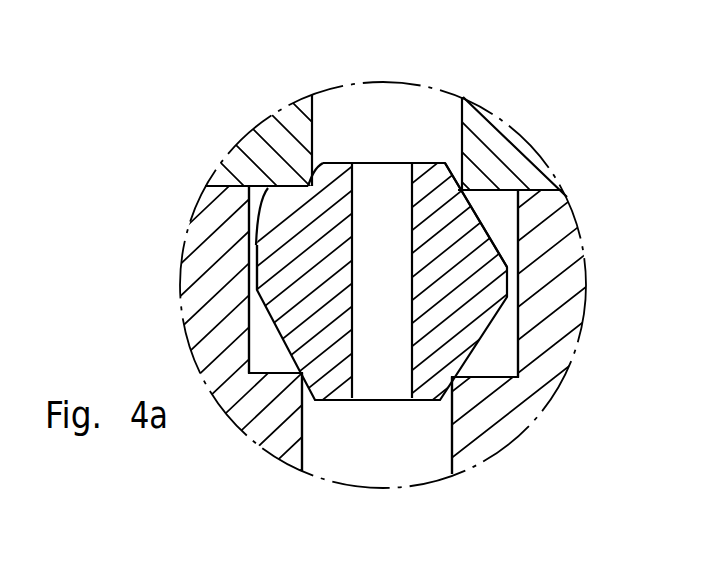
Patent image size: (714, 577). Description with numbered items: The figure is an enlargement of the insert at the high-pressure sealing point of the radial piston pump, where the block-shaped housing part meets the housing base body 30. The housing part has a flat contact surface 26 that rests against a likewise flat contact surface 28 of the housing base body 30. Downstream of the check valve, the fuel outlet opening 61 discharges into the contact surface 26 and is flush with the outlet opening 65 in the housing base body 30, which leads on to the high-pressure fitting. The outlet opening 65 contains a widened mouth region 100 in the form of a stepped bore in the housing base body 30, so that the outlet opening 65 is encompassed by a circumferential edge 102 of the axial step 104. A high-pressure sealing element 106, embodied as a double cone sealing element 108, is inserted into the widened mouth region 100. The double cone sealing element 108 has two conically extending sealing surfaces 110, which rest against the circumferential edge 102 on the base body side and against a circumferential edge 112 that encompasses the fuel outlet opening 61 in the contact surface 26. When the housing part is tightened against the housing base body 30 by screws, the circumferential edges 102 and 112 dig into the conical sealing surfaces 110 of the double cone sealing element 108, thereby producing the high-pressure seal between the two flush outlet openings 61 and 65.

The contact surface 26 is at (268, 189).
The contact surface 28 is at (224, 182).
The housing base body 30 is at (553, 225).
The fuel outlet opening 61 is at (312, 125).
The outlet opening 65 is at (452, 423).
The widened mouth region 100 is at (514, 216).
The circumferential edge 102 is at (457, 393).
The axial step 104 is at (488, 377).
The high-pressure sealing element 106 is at (425, 150).
The double cone sealing element 108 is at (441, 193).
The conical sealing surfaces 110 is at (276, 327).
The circumferential edge 112 is at (340, 163).